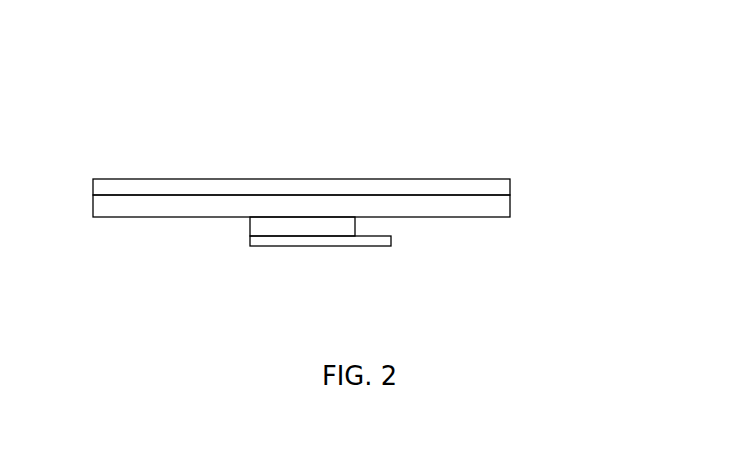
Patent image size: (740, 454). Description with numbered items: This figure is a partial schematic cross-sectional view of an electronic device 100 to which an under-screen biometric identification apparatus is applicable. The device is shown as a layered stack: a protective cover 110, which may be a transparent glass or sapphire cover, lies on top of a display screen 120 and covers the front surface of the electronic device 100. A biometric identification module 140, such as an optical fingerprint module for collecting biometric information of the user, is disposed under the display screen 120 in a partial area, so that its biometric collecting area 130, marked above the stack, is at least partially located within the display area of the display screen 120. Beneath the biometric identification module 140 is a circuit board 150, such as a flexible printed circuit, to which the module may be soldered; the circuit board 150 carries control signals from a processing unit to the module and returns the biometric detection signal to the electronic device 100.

The electronic device 100 is at (390, 88).
The protective cover 110 is at (500, 188).
The display screen 120 is at (500, 205).
The biometric collecting area 130 is at (355, 175).
The biometric identification module 140 is at (355, 222).
The circuit board 150 is at (375, 242).